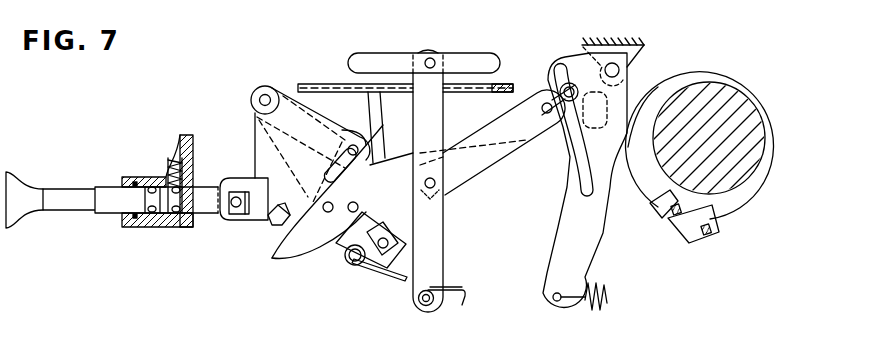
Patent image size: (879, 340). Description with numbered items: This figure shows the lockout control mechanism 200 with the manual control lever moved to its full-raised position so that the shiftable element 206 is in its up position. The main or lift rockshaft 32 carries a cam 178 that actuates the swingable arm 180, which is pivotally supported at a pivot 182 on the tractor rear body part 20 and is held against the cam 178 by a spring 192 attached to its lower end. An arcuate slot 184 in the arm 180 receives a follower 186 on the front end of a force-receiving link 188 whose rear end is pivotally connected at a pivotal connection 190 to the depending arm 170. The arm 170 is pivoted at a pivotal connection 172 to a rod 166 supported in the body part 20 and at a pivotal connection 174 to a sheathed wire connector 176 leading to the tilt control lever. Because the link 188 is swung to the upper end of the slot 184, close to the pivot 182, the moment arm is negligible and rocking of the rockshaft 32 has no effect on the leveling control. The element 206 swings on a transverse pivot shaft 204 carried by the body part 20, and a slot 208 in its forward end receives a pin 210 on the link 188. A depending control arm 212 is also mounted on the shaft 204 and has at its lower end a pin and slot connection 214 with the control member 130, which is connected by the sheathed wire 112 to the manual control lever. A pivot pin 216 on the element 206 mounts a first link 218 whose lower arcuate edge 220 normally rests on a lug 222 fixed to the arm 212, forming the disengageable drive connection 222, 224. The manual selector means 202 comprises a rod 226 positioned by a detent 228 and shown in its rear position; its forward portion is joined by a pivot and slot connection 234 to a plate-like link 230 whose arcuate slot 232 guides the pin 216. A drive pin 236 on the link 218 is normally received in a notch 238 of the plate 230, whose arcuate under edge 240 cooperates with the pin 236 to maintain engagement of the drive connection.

The tractor rear body part 20 is at (125, 177).
The rockshaft 32 is at (742, 105).
The connecting means 112 is at (393, 281).
The control member 130 is at (347, 267).
The rod 166 is at (381, 54).
The depending arm 170 is at (439, 276).
The pivotal connection 172 is at (430, 57).
The pivotal connection 174 is at (426, 306).
The sheathed wire connector 176 is at (462, 295).
The cam 178 is at (645, 108).
The swingable arm 180 is at (585, 265).
The pivot 182 is at (619, 68).
The arcuate slot 184 is at (582, 187).
The follower 186 is at (565, 84).
The link 188 is at (492, 153).
The pivotal connection 190 is at (452, 192).
The spring 192 is at (607, 303).
The control mechanism 200 is at (293, 66).
The manual selector means 202 is at (83, 173).
The transverse pivot shaft 204 is at (263, 93).
The shiftable element 206 is at (497, 84).
The slot 208 is at (567, 129).
The pin 210 is at (541, 102).
The control arm 212 is at (392, 253).
The pin and slot connection 214 is at (376, 270).
The pivot pin 216 is at (380, 130).
The first link 218 is at (272, 259).
The lower arcuate edge 220 is at (296, 262).
The lug 222 is at (372, 166).
The drive connection 224 is at (362, 203).
The rod 226 is at (82, 205).
The detent 228 is at (170, 182).
The link 230 is at (255, 137).
The arcuate slot 232 is at (344, 146).
The pivot and slot connection 234 is at (233, 204).
The drive pin 236 is at (326, 213).
The notch 238 is at (272, 216).
The arcuate under edge 240 is at (310, 198).